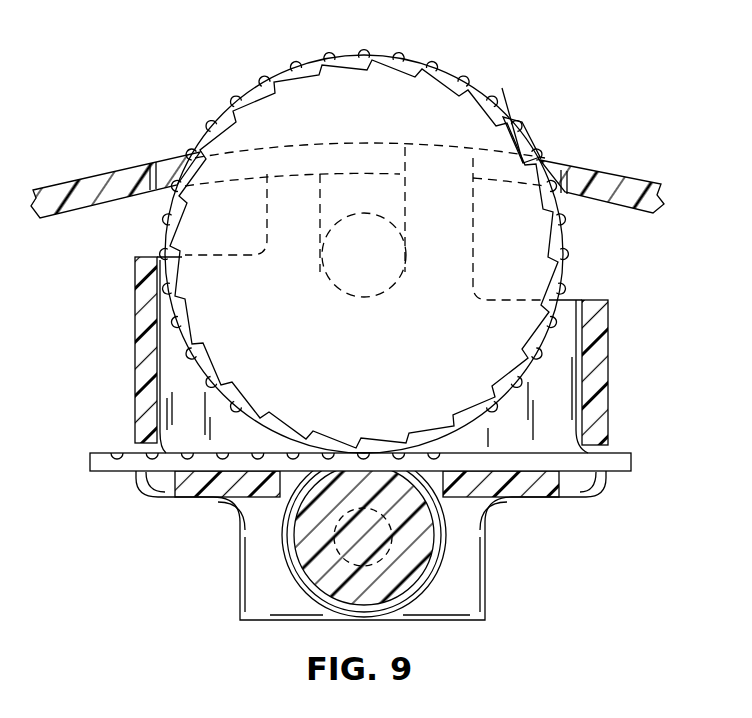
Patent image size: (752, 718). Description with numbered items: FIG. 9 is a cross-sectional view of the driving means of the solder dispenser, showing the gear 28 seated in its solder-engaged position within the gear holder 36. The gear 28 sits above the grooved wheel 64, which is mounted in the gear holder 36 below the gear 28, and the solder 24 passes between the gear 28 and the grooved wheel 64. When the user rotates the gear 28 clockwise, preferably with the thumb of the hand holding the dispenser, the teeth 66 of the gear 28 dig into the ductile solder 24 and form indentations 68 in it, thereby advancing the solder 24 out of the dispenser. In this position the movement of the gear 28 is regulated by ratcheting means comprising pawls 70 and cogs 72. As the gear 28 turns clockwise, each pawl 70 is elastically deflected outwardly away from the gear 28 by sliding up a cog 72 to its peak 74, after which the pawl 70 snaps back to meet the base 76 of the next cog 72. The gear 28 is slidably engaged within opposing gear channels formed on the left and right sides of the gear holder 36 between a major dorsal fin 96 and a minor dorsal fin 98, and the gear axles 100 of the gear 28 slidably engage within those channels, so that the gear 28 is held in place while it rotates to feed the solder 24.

The solder 24 is at (633, 457).
The gear 28 is at (298, 105).
The gear holder 36 is at (143, 487).
The grooved wheel 64 is at (300, 562).
The teeth 66 is at (233, 100).
The indentations 68 is at (128, 453).
The pawls 70 is at (134, 267).
The cogs 72 is at (523, 121).
The peak 74 is at (505, 87).
The base 76 is at (537, 156).
The major dorsal fin 96 is at (468, 252).
The minor dorsal fin 98 is at (277, 218).
The gear axles 100 is at (365, 296).